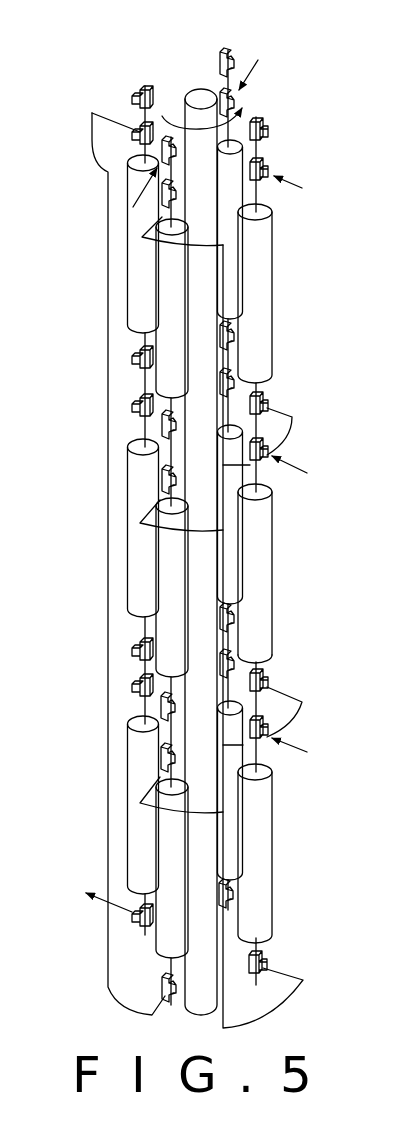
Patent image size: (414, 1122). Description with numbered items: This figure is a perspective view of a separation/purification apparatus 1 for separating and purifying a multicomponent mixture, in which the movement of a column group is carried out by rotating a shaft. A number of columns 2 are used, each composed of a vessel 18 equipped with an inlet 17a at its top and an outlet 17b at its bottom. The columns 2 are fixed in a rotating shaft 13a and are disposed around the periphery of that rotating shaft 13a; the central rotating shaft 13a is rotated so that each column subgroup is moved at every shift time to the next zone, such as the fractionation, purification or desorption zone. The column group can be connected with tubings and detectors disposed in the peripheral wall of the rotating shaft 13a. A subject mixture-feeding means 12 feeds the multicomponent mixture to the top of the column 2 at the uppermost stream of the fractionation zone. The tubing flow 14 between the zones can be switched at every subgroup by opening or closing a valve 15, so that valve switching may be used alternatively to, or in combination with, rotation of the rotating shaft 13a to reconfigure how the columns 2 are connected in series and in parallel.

The separation/purification apparatus 1 is at (305, 123).
The column 2 is at (272, 828).
The subject mixture-feeding means 12 is at (127, 198).
The rotating shaft 13a is at (202, 94).
The tubing flow 14 is at (292, 417).
The valve 15 is at (267, 407).
The inlet 17a is at (257, 494).
The outlet 17b is at (265, 662).
The vessel 18 is at (260, 563).